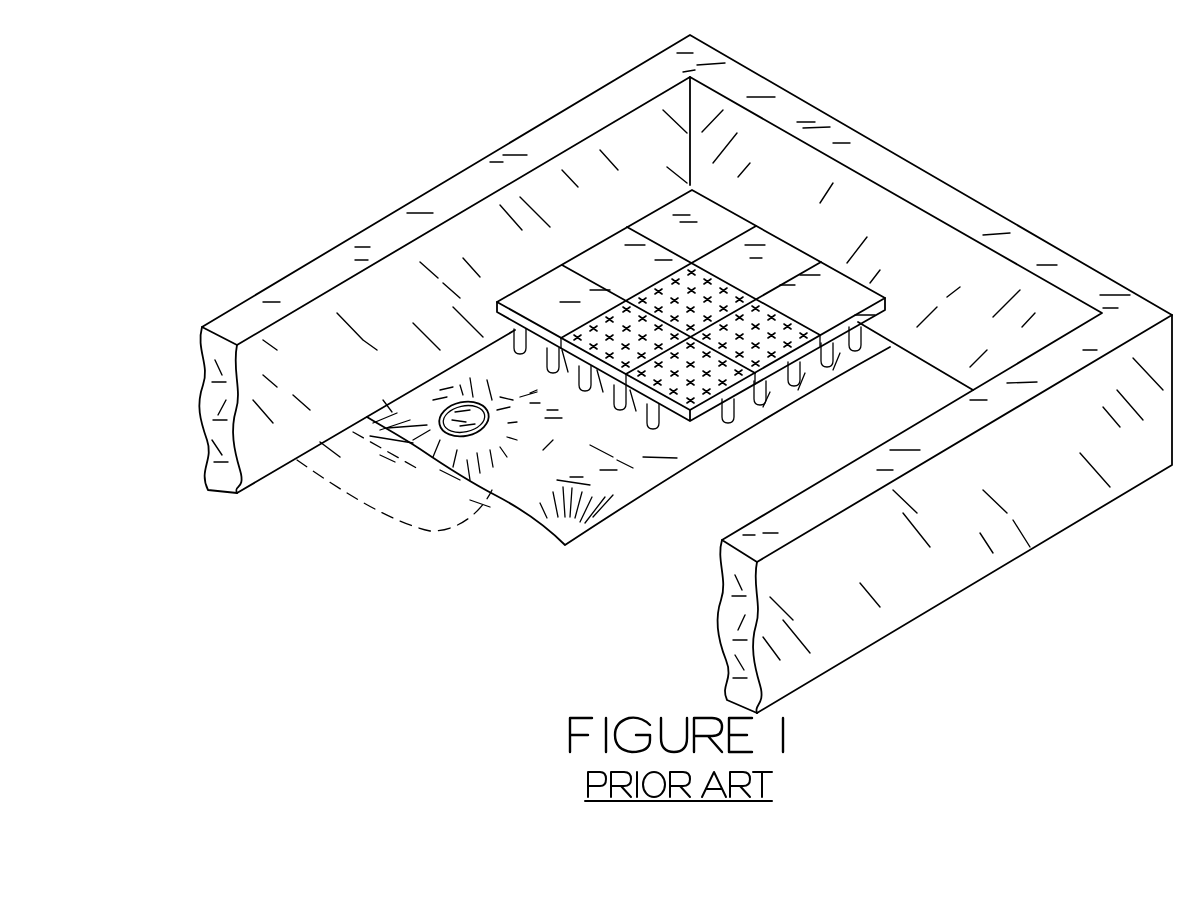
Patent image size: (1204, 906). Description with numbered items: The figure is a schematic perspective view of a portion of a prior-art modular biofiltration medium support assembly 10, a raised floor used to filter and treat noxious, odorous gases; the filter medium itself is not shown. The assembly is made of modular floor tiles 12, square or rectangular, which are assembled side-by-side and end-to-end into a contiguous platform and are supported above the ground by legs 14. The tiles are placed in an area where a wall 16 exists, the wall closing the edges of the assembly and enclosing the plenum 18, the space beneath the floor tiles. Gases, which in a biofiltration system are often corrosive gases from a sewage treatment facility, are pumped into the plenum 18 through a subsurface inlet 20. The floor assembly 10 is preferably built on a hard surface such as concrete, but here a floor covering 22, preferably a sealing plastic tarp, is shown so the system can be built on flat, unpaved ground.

The modular biofiltration medium support assembly 10 is at (390, 555).
The floor tiles 12 is at (597, 387).
The legs 14 is at (521, 370).
The wall 16 is at (322, 252).
The plenum 18 is at (665, 420).
The subsurface inlet 20 is at (445, 427).
The floor covering 22 is at (655, 460).